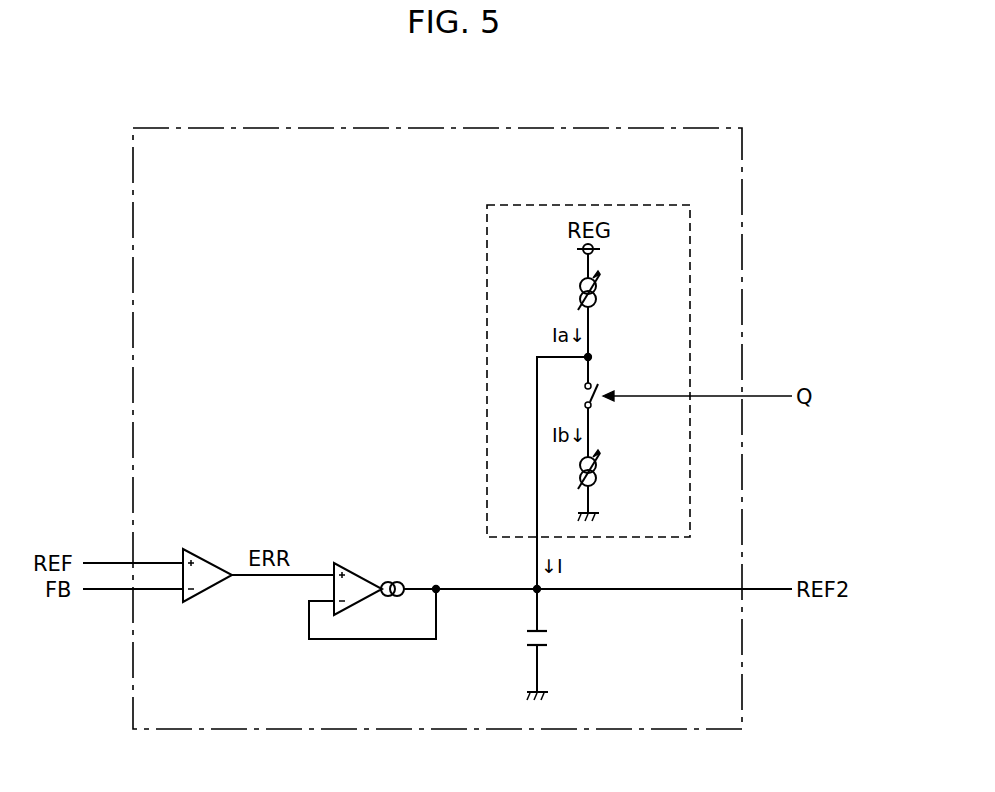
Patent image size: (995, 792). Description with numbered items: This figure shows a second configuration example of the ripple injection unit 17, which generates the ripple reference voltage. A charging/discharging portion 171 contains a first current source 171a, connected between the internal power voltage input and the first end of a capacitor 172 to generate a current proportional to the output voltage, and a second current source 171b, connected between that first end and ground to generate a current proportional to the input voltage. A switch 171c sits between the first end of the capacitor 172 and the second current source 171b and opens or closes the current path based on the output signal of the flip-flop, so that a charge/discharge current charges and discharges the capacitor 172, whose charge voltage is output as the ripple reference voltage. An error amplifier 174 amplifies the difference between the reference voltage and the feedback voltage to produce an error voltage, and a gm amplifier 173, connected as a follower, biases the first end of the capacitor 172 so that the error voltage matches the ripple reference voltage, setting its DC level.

The ripple injection unit 17 is at (437, 128).
The charging/discharging portion 171 is at (592, 205).
The current source 171a is at (603, 297).
The current source 171b is at (603, 476).
The switch 171c is at (600, 381).
The capacitor 172 is at (550, 640).
The gm amplifier 173 is at (366, 568).
The error amplifier 174 is at (212, 559).